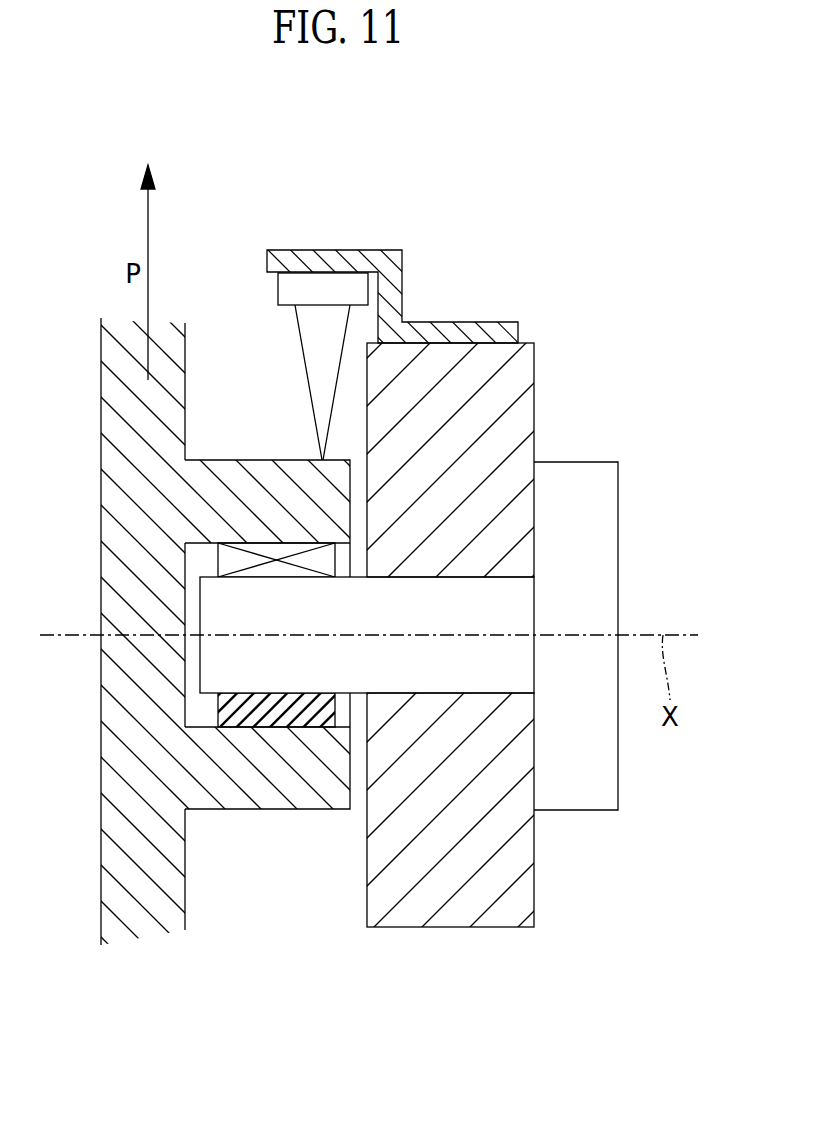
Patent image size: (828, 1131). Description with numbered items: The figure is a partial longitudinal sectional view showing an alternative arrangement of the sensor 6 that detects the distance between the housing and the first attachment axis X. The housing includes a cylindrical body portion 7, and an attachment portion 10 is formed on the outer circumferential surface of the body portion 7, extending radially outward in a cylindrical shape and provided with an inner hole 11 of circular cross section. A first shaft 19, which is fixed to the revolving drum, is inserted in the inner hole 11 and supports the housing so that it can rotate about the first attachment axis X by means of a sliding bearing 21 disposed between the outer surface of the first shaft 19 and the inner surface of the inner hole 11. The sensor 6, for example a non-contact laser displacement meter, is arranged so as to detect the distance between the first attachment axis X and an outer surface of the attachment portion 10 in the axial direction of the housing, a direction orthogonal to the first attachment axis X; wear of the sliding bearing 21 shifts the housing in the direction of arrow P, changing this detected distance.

The sensor 6 is at (278, 285).
The body portion 7 is at (185, 890).
The attachment portion 10 is at (250, 460).
The inner hole 11 is at (205, 727).
The first shaft 19 is at (630, 525).
The sliding bearing 21 is at (218, 560).